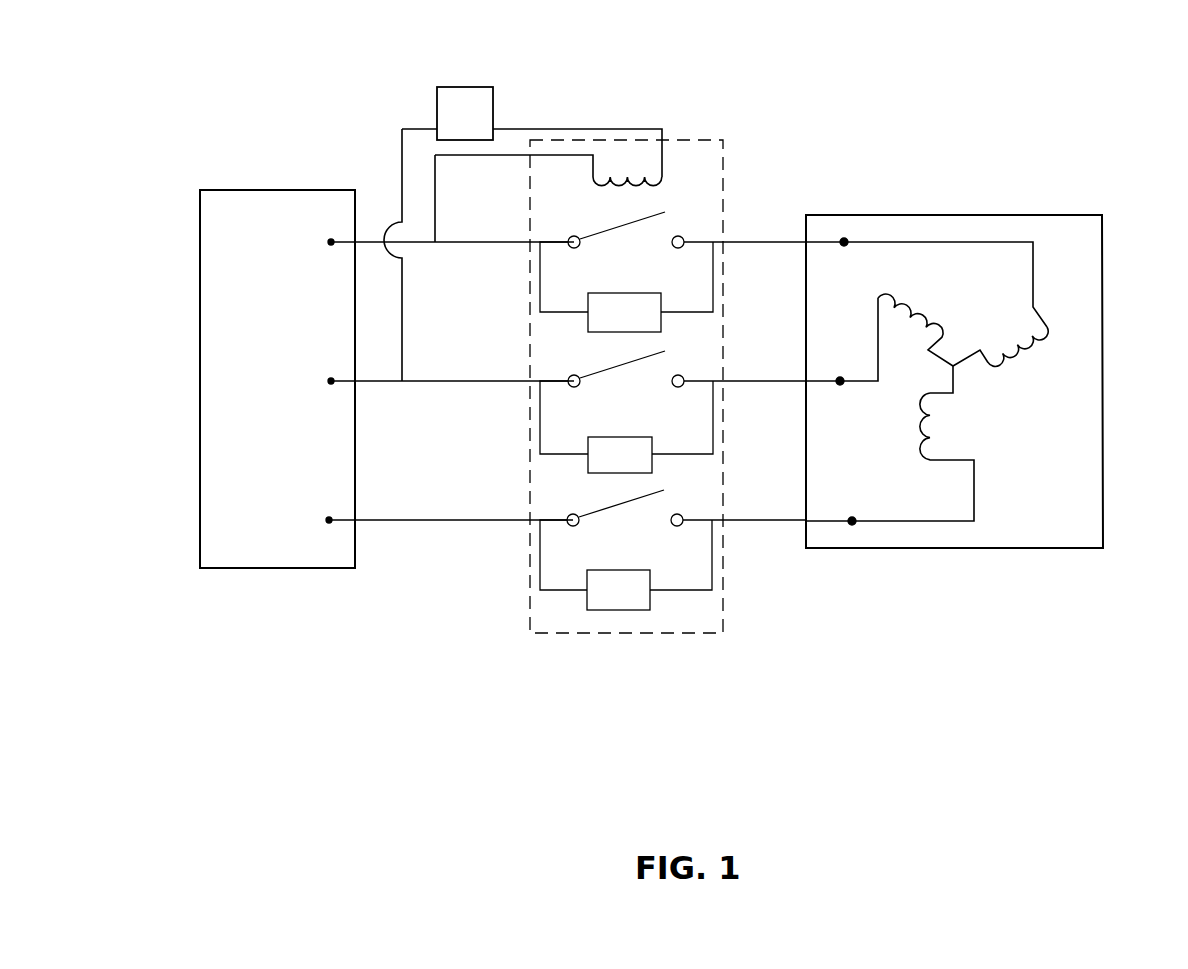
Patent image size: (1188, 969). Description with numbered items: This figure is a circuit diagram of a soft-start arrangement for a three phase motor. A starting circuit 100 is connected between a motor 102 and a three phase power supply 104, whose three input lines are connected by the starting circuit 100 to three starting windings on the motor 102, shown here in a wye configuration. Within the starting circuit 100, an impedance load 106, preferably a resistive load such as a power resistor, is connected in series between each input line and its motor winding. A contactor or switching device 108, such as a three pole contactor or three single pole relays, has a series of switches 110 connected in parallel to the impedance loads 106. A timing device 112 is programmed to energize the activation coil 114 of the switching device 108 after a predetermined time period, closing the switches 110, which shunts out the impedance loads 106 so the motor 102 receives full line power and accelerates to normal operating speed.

The starting circuit 100 is at (534, 683).
The motor 102 is at (1083, 548).
The three phase power supply 104 is at (242, 568).
The impedance load 106 is at (588, 328).
The switching device 108 is at (723, 633).
The switches 110 is at (619, 207).
The timing device 112 is at (493, 87).
The activation coil 114 is at (633, 152).